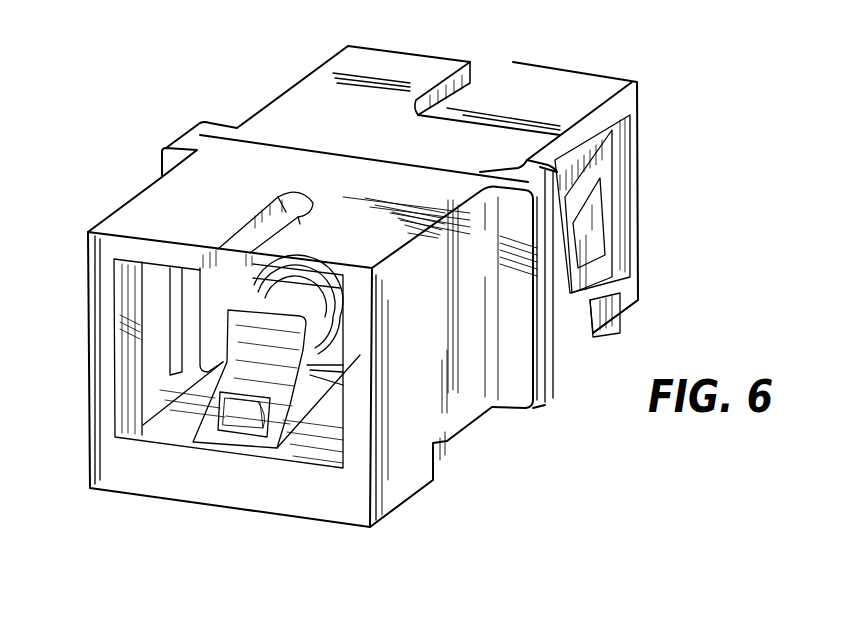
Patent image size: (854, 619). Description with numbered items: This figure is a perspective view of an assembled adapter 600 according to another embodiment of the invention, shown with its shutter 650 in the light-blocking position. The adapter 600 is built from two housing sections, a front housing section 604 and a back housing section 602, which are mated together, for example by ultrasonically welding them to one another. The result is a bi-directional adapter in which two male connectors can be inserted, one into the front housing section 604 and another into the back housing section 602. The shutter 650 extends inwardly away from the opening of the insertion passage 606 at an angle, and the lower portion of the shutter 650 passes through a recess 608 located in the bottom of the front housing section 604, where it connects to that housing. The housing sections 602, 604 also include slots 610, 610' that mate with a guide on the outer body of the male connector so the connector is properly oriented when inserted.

The adapter 600 is at (700, 66).
The back housing section 602 is at (640, 142).
The front housing section 604 is at (447, 440).
The insertion passage 606 is at (170, 346).
The recess 608 is at (360, 355).
The slot 610 is at (250, 225).
The slot 610' is at (448, 64).
The shutter 650 is at (207, 422).